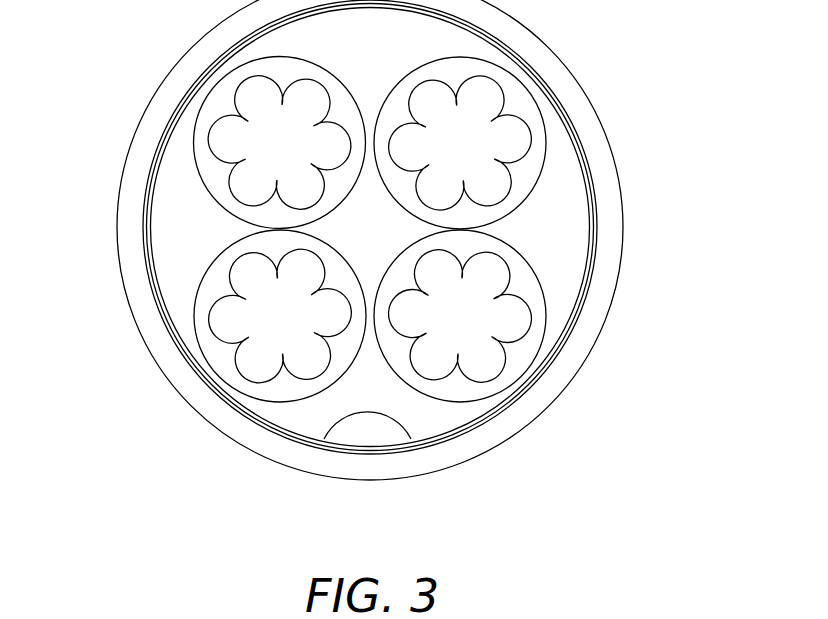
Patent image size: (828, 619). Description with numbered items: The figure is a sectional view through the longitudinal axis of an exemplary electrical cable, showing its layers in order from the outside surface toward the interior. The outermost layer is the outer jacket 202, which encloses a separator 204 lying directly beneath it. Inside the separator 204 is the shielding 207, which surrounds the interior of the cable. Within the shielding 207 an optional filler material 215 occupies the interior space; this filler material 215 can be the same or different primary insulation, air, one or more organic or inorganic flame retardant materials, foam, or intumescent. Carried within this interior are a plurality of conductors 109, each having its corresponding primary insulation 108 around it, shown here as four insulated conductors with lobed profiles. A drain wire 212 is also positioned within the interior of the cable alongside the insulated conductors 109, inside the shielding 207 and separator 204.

The outer jacket 202 is at (562, 93).
The separator 204 is at (570, 120).
The shielding 207 is at (575, 157).
The optional filler material 215 is at (175, 231).
The primary insulation 108 is at (523, 283).
The conductors 109 is at (512, 323).
The drain wire 212 is at (370, 438).